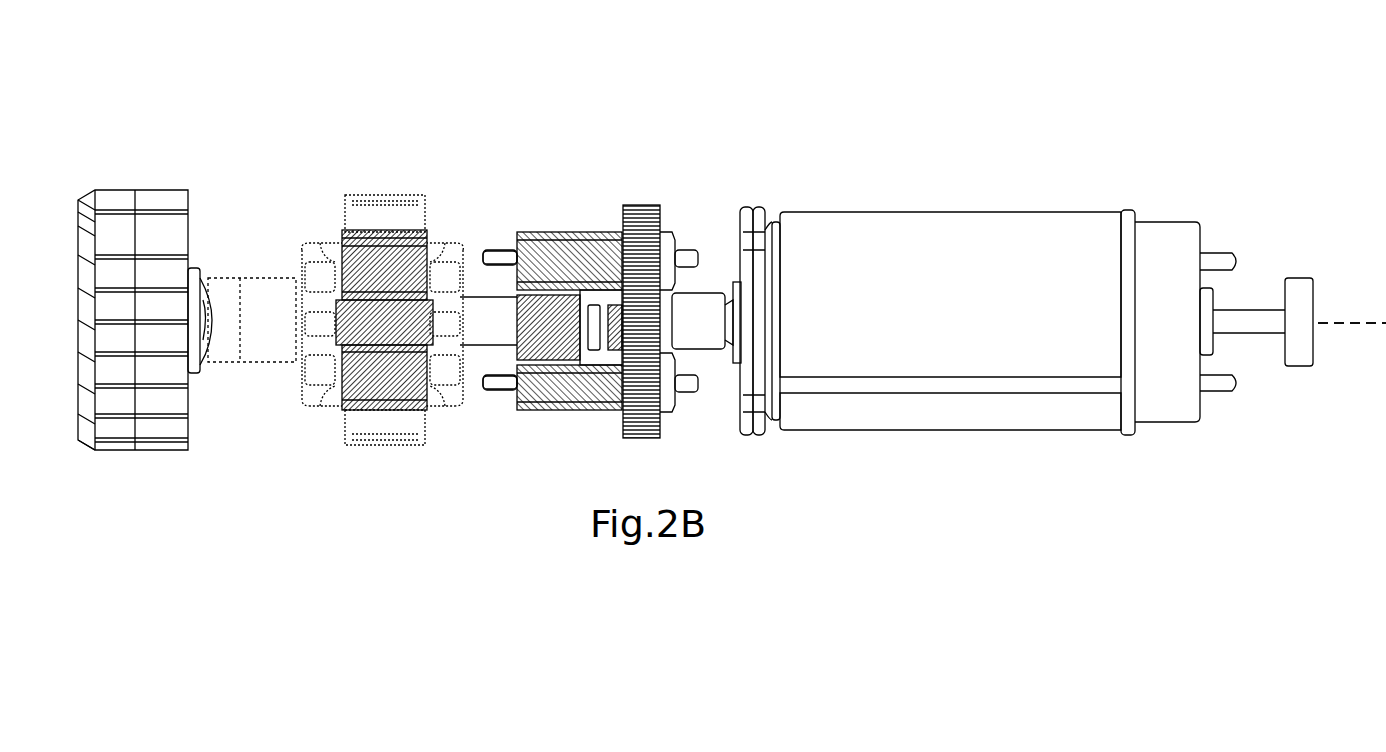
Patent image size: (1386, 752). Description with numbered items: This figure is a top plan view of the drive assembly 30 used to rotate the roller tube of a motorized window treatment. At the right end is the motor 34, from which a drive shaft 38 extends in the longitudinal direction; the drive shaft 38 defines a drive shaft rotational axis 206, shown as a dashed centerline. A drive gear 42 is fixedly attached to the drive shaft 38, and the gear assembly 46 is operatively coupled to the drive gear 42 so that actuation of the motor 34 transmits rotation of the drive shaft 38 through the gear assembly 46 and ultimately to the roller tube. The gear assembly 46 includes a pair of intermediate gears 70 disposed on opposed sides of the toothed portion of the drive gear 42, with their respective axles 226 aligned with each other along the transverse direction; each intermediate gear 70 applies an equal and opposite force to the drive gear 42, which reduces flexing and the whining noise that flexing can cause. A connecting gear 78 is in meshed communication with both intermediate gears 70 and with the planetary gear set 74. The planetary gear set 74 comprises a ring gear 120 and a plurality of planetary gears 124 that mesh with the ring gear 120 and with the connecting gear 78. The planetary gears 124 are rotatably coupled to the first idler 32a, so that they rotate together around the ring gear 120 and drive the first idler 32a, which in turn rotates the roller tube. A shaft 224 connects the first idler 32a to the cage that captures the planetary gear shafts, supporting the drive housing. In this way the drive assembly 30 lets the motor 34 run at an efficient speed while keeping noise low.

The drive assembly 30 is at (594, 138).
The first idler 32a is at (165, 218).
The shaft 224 is at (260, 278).
The planetary gear set 74 is at (353, 190).
The planetary gears 124 is at (387, 235).
The ring gear 120 is at (396, 438).
The gear assembly 46 is at (493, 230).
The connecting gear 78 is at (503, 392).
The axles 226 is at (506, 232).
The intermediate gears 70 is at (652, 210).
The drive gear 42 is at (706, 310).
The drive shaft 38 is at (735, 322).
The motor 34 is at (855, 255).
The drive shaft rotational axis 206 is at (1350, 323).